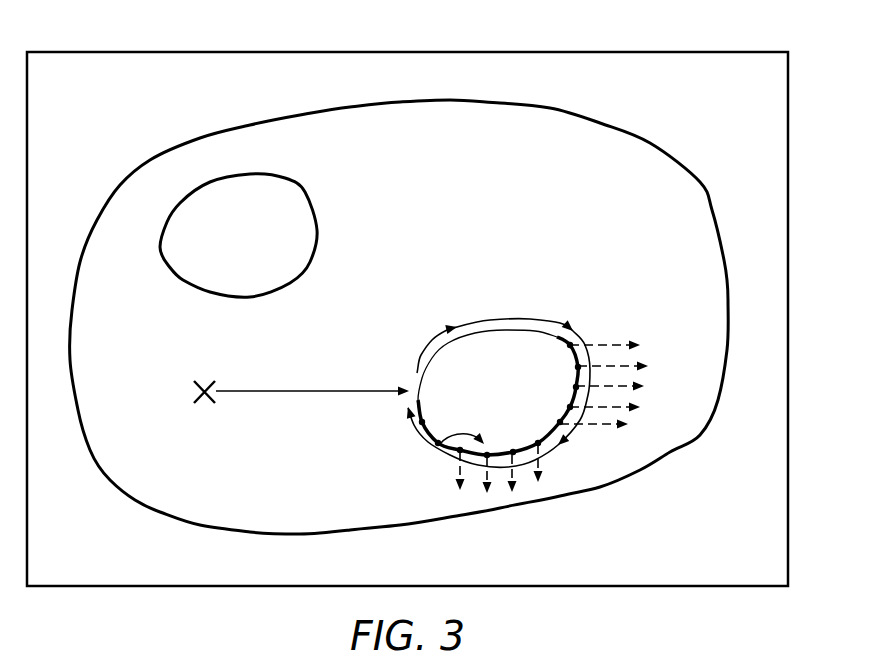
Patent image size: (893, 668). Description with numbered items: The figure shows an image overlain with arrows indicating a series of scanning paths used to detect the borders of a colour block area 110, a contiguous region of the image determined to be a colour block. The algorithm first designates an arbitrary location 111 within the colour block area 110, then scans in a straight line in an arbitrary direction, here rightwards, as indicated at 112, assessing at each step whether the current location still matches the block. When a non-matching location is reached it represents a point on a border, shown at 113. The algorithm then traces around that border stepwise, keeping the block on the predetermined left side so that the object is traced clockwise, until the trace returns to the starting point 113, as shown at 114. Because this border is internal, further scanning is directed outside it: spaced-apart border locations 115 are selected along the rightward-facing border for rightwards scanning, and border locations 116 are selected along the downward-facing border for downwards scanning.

The colour block area 110 is at (562, 130).
The arbitrary location 111 is at (183, 393).
The scan direction 112 is at (283, 390).
The border point 113 is at (410, 377).
The traced border 114 is at (408, 427).
The rightwards scanning border locations 115 is at (562, 375).
The downwards scanning border locations 116 is at (440, 458).